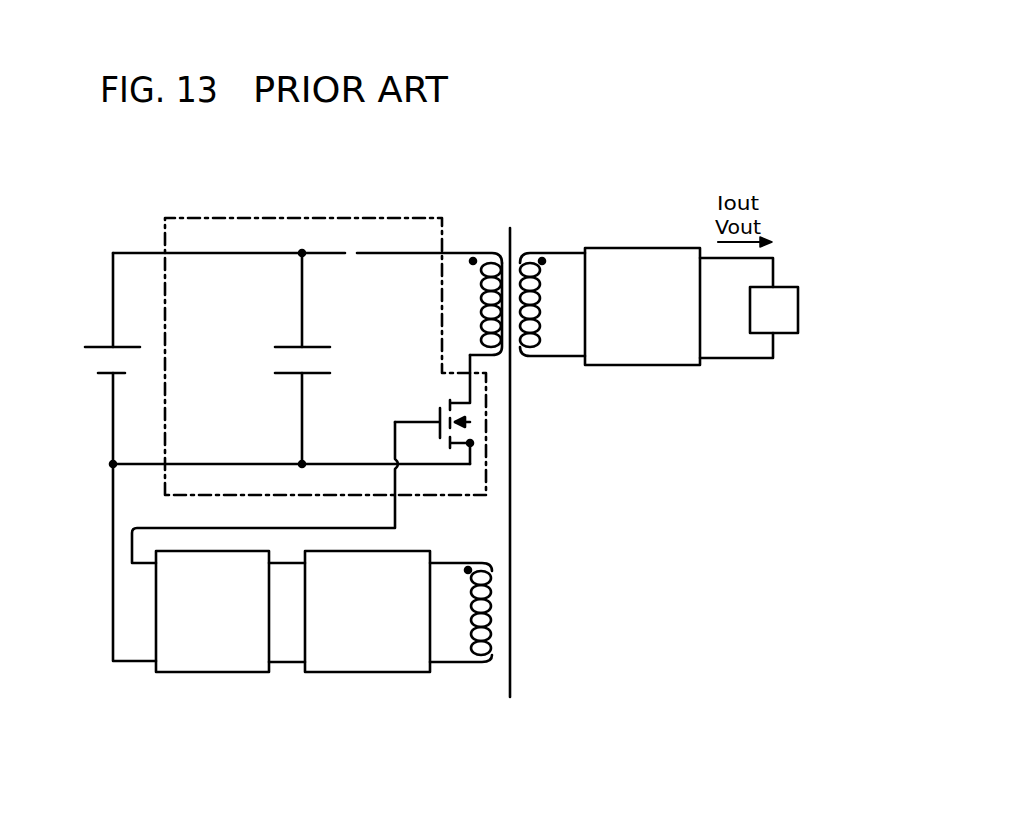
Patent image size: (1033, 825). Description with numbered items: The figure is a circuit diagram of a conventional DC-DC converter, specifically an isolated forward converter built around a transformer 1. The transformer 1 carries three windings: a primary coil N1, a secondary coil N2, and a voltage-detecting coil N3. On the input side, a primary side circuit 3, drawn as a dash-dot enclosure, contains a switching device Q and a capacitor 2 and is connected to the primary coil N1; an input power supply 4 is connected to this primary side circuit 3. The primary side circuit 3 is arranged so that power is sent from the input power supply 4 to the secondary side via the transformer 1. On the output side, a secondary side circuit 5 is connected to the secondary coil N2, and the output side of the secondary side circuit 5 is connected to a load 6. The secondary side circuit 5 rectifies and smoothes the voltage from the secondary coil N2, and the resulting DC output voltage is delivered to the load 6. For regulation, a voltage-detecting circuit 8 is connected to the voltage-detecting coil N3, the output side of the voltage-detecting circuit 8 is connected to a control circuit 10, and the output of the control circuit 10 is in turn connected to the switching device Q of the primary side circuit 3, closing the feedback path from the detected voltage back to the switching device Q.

The transformer 1 is at (507, 446).
The capacitor 2 is at (324, 347).
The primary side circuit 3 is at (262, 218).
The input power supply 4 is at (130, 347).
The secondary side circuit 5 is at (638, 248).
The load 6 is at (786, 287).
The voltage-detecting circuit 8 is at (372, 672).
The control circuit 10 is at (219, 672).
The primary coil N1 is at (477, 306).
The secondary coil N2 is at (552, 304).
The voltage-detecting coil N3 is at (461, 612).
The switching device Q is at (437, 417).